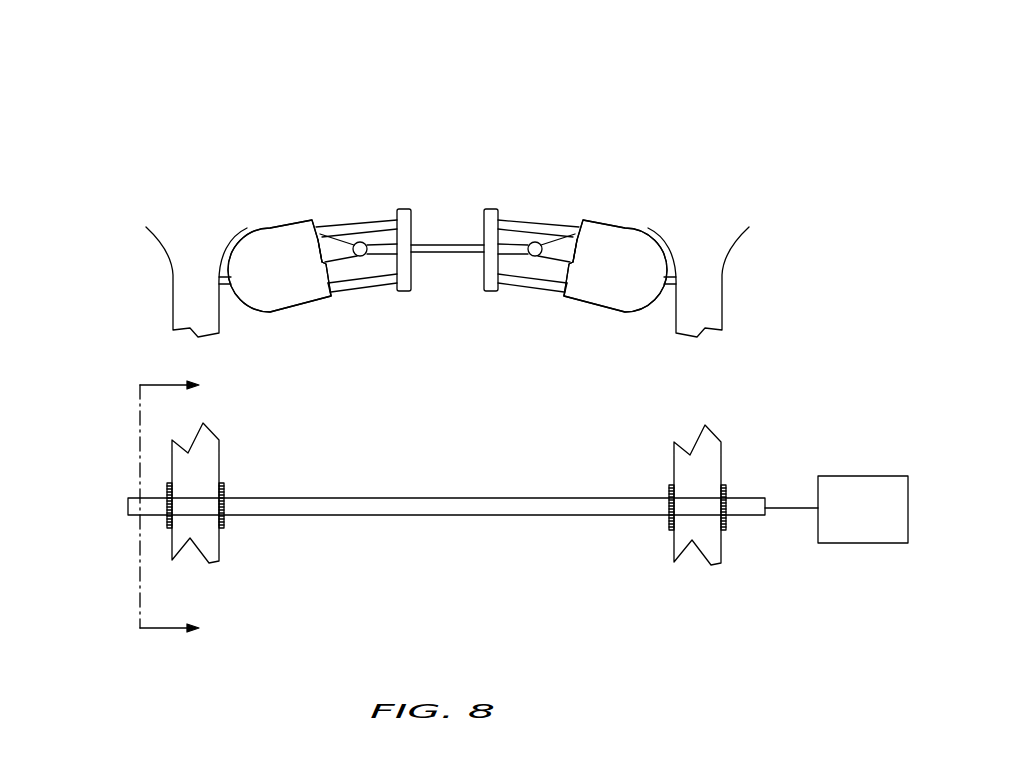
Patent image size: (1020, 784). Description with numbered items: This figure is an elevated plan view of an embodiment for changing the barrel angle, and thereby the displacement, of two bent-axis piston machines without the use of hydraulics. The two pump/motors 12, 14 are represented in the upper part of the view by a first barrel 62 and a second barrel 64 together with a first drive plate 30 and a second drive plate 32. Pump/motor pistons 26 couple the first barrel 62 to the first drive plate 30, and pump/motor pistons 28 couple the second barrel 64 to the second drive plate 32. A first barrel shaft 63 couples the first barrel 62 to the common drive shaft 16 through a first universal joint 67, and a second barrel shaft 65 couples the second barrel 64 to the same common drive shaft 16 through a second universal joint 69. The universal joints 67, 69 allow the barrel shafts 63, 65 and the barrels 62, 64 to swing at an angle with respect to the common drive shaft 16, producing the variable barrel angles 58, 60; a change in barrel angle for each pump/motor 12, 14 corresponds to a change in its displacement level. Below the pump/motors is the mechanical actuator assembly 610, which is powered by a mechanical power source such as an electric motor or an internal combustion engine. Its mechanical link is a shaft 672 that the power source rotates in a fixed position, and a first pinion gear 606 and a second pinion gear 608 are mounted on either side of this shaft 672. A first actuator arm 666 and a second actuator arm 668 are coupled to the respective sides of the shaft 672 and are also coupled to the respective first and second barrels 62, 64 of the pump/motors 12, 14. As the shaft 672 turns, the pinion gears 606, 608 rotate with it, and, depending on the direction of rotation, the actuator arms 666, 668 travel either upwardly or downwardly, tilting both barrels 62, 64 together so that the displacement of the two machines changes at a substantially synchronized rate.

The pump/motor 12 is at (368, 144).
The pump/motor 14 is at (527, 144).
The common drive shaft 16 is at (447, 256).
The pump/motor pistons 26 is at (340, 220).
The pump/motor pistons 28 is at (555, 220).
The first drive plate 30 is at (405, 208).
The second drive plate 32 is at (491, 208).
The barrel angle 58 is at (405, 300).
The barrel angle 60 is at (569, 301).
The first barrel 62 is at (305, 309).
The first barrel shaft 63 is at (332, 238).
The second barrel 64 is at (591, 309).
The second barrel shaft 65 is at (563, 238).
The first universal joint 67 is at (360, 242).
The second universal joint 69 is at (535, 242).
The first pinion gear 606 is at (224, 530).
The second pinion gear 608 is at (727, 483).
The mechanical actuator assembly 610 is at (596, 589).
The first actuator arm 666 is at (173, 306).
The second actuator arm 668 is at (722, 312).
The shaft 672 is at (337, 516).